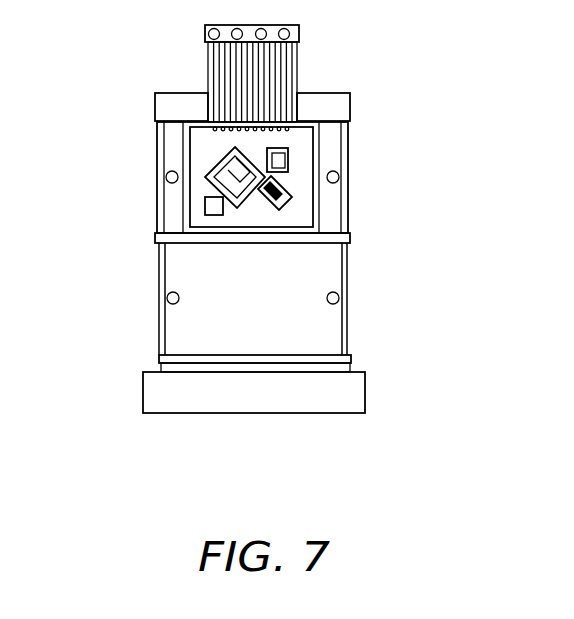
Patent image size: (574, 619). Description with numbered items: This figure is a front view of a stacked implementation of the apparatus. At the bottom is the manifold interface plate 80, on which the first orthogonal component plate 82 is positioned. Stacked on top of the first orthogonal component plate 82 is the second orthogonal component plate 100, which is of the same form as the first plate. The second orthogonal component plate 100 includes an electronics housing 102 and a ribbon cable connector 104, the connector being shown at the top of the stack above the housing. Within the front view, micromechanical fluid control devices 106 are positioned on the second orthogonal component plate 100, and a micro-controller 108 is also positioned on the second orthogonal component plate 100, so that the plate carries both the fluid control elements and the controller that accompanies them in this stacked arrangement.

The manifold interface plate 80 is at (353, 387).
The first orthogonal component plate 82 is at (328, 278).
The second orthogonal component plate 100 is at (338, 156).
The electronics housing 102 is at (317, 145).
The ribbon cable connector 104 is at (299, 60).
The micromechanical fluid control devices 106 is at (213, 167).
The micro-controller 108 is at (202, 210).